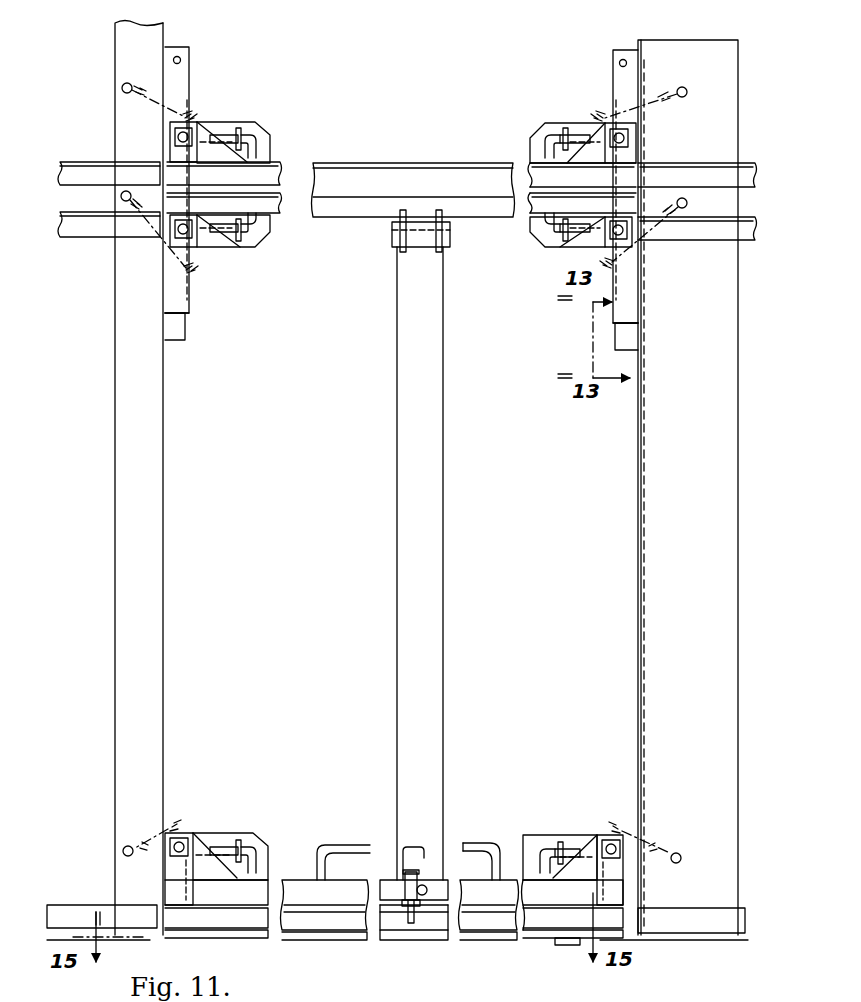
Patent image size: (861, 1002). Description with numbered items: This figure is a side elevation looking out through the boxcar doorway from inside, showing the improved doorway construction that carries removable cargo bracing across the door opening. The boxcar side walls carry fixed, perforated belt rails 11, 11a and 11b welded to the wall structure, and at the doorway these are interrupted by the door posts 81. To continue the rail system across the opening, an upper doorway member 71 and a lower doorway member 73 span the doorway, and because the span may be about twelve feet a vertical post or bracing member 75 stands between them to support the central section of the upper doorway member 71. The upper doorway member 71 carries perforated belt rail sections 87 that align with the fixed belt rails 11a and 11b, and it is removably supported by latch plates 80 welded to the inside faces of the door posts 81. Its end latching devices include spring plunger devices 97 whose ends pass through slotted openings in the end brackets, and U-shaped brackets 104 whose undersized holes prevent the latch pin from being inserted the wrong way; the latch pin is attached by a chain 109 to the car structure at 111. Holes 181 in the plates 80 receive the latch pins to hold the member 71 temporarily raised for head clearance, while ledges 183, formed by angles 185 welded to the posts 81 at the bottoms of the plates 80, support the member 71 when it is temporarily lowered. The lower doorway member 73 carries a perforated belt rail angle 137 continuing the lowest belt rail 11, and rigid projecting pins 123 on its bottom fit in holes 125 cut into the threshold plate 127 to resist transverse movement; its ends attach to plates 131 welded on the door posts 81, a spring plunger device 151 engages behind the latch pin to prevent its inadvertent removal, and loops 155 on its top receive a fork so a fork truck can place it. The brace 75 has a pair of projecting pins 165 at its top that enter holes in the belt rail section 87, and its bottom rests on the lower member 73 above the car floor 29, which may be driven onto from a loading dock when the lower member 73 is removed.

The belt rail 11 is at (60, 905).
The belt rail 11a is at (78, 212).
The belt rail 11b is at (76, 160).
The floor 29 is at (702, 940).
The upper doorway member 71 is at (442, 158).
The lower doorway member 73 is at (543, 833).
The vertical post or bracing member 75 is at (456, 552).
The latch plate 80 is at (192, 82).
The door post 81 is at (155, 520).
The belt rail section 87 is at (348, 170).
The spring plunger device 97 is at (262, 142).
The bracket 104 is at (630, 152).
The chain 109 is at (197, 117).
The attachment point on freight car structure 111 is at (130, 84).
The projecting pin 123 is at (565, 946).
The hole 125 is at (380, 878).
The threshold plate 127 is at (478, 933).
The plate 131 is at (165, 880).
The perforated belt rail angle 137 is at (298, 878).
The spring plunger device 151 is at (230, 835).
The loop 155 is at (478, 843).
The projecting pin 165 is at (452, 244).
The hole 181 is at (181, 57).
The ledge 183 is at (185, 313).
The angle 185 is at (186, 334).